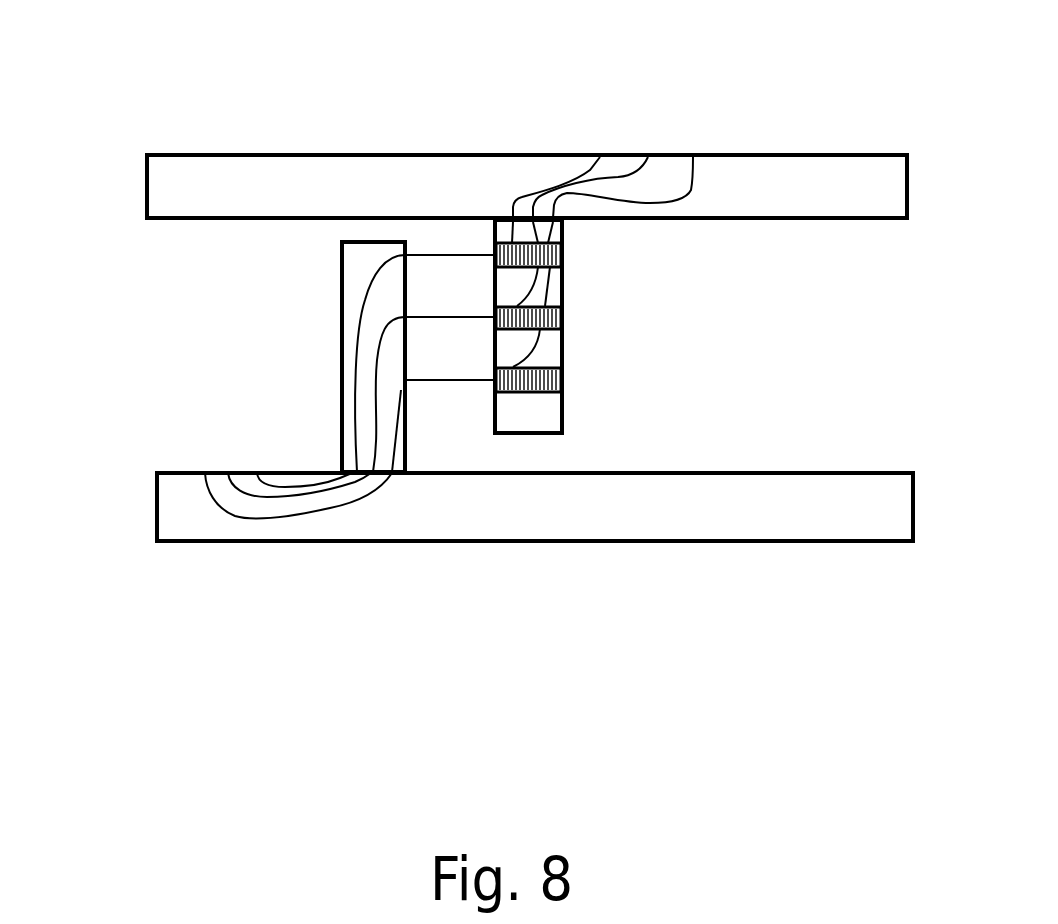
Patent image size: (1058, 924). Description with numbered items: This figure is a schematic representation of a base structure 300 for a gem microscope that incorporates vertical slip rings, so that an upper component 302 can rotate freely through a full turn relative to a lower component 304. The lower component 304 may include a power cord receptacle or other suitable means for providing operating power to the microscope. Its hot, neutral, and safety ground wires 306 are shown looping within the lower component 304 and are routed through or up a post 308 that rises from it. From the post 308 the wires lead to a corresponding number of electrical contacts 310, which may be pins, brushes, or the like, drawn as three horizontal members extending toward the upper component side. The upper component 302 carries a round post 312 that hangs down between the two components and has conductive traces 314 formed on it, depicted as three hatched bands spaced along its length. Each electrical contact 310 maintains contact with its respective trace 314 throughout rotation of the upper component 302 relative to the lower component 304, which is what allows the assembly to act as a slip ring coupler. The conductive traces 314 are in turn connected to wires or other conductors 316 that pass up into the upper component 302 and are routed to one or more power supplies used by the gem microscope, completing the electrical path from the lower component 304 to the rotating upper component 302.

The base structure 300 is at (193, 47).
The upper component 302 is at (147, 180).
The lower component 304 is at (728, 543).
The wires 306 is at (376, 518).
The post 308 is at (342, 297).
The electrical contacts 310 is at (432, 256).
The round post 312 is at (562, 413).
The conductive traces 314 is at (562, 255).
The wires or other conductors 316 is at (546, 189).